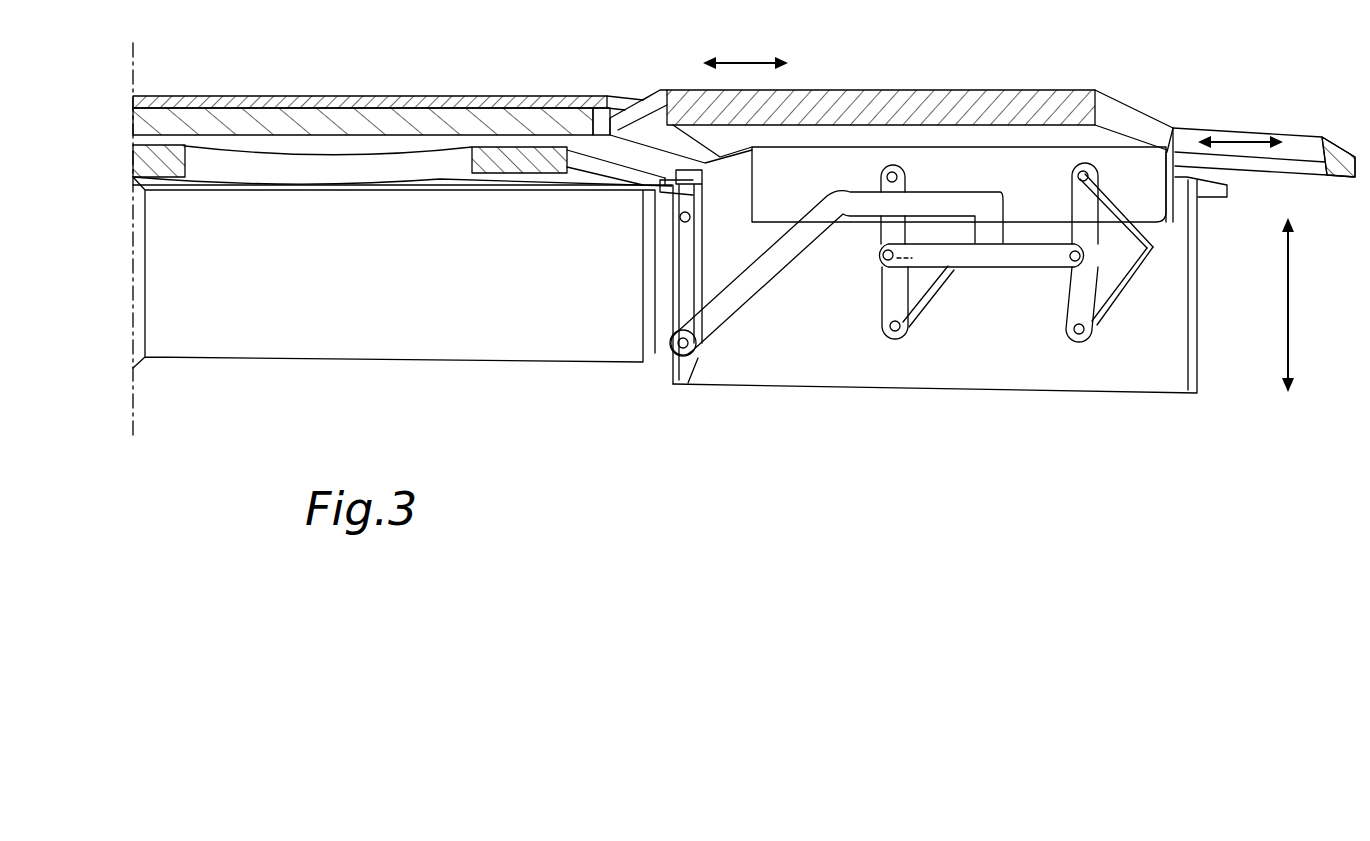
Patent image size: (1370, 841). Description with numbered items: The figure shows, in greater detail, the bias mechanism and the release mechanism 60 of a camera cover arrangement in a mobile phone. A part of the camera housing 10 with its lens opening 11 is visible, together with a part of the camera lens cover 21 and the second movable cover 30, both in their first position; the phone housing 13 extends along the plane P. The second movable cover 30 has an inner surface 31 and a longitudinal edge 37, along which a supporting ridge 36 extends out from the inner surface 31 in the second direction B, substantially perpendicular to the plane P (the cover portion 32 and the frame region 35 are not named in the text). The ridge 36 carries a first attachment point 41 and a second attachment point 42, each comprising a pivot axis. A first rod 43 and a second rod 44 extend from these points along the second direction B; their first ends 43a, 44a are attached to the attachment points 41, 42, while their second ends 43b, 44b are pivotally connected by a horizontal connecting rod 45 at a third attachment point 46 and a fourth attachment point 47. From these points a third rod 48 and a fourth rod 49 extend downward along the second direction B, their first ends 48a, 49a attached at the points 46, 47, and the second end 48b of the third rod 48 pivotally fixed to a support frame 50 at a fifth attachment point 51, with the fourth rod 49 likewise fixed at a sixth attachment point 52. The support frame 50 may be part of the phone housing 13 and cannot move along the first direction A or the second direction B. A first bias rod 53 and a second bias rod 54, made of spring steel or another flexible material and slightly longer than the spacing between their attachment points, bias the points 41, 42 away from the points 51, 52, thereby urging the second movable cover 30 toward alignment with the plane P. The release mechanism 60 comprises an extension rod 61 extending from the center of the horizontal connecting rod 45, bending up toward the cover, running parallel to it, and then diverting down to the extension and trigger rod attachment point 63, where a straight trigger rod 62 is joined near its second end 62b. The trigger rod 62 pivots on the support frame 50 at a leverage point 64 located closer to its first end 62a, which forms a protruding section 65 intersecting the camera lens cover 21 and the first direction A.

The camera housing 10 is at (380, 335).
The lens opening 11 is at (347, 167).
The phone housing 13 is at (1290, 120).
The camera lens cover 21 is at (320, 100).
The second movable cover 30 is at (891, 92).
The inner surface 31 is at (1023, 138).
The movable plate 32 is at (920, 90).
The frame 35 is at (1162, 299).
The supporting ridge 36 is at (1190, 210).
The longitudinal edge 37 is at (1155, 130).
The first attachment point 41 is at (880, 177).
The second attachment point 42 is at (1070, 176).
The first rod 43 is at (897, 222).
The first end of first rod 43a is at (908, 173).
The second end of first rod 43b is at (880, 262).
The second rod 44 is at (1089, 208).
The first end of second rod 44a is at (1097, 176).
The second end of second rod 44b is at (1096, 258).
The horizontal connecting rod 45 is at (956, 270).
The third attachment point 46 is at (878, 254).
The fourth attachment point 47 is at (1062, 262).
The third rod 48 is at (889, 321).
The first end of third rod 48a is at (930, 290).
The second end of third rod 48b is at (910, 333).
The fourth rod 49 is at (1124, 317).
The first end of fourth rod 49a is at (1113, 288).
The support frame 50 is at (757, 363).
The fifth attachment point 51 is at (886, 336).
The sixth attachment point 52 is at (1078, 342).
The first bias rod 53 is at (1003, 258).
The second bias rod 54 is at (1152, 250).
The release mechanism 60 is at (801, 302).
The extension rod 61 is at (817, 212).
The trigger rod 62 is at (674, 302).
The first end of trigger rod 62a is at (700, 190).
The second end of trigger rod 62b is at (681, 387).
The extension and trigger rod attachment point 63 is at (672, 356).
The leverage point 64 is at (680, 219).
The protruding section 65 is at (682, 193).
The first direction A is at (745, 62).
The second direction B is at (1292, 296).
The plane P is at (1237, 135).